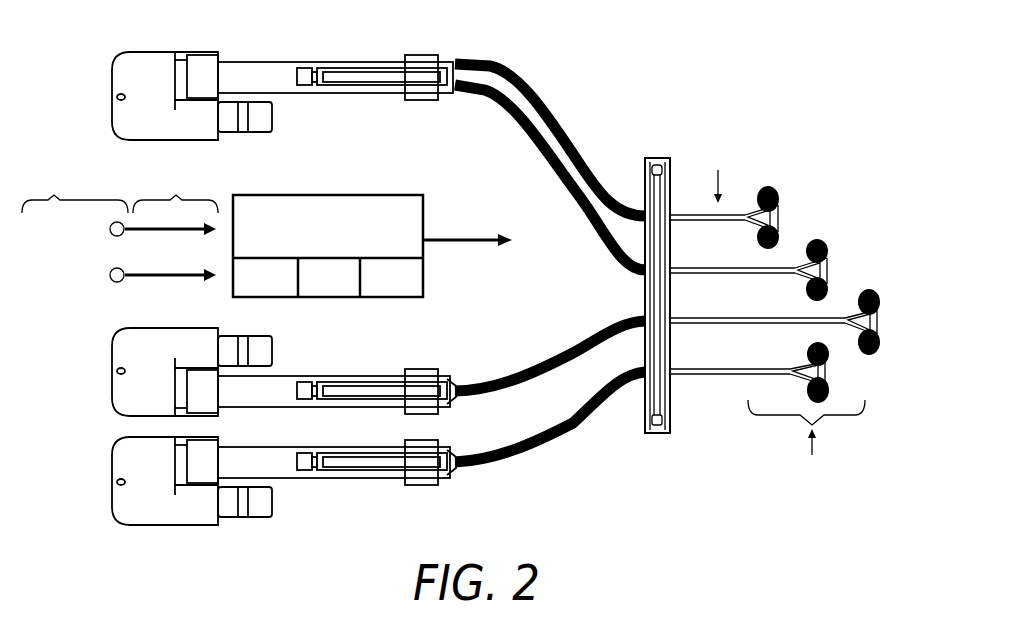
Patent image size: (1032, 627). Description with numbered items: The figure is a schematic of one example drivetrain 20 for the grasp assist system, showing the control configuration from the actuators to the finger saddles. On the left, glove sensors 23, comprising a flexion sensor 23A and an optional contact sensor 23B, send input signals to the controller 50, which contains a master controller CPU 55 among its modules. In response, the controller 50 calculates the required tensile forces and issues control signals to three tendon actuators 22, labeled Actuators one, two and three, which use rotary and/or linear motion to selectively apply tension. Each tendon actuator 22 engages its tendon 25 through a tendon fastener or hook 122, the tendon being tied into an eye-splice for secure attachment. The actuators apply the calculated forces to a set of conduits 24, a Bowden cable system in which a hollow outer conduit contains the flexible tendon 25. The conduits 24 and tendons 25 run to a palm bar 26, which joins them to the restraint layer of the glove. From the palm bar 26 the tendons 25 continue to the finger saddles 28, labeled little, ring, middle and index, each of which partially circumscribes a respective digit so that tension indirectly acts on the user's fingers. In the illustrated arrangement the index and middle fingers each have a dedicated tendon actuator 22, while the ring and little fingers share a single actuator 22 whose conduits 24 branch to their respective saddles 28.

The drivetrain 20 is at (472, 273).
The tendon actuator 22 is at (112, 95).
The glove sensors 23 is at (117, 218).
The flexion sensor 23A is at (117, 236).
The contact sensor 23B is at (117, 282).
The conduit 24 is at (558, 172).
The tendon 25 is at (428, 56).
The palm bar 26 is at (645, 427).
The finger saddle 28 is at (768, 187).
The controller 50 is at (372, 235).
The master controller CPU 55 is at (331, 277).
The tendon fastener or hook 122 is at (306, 86).